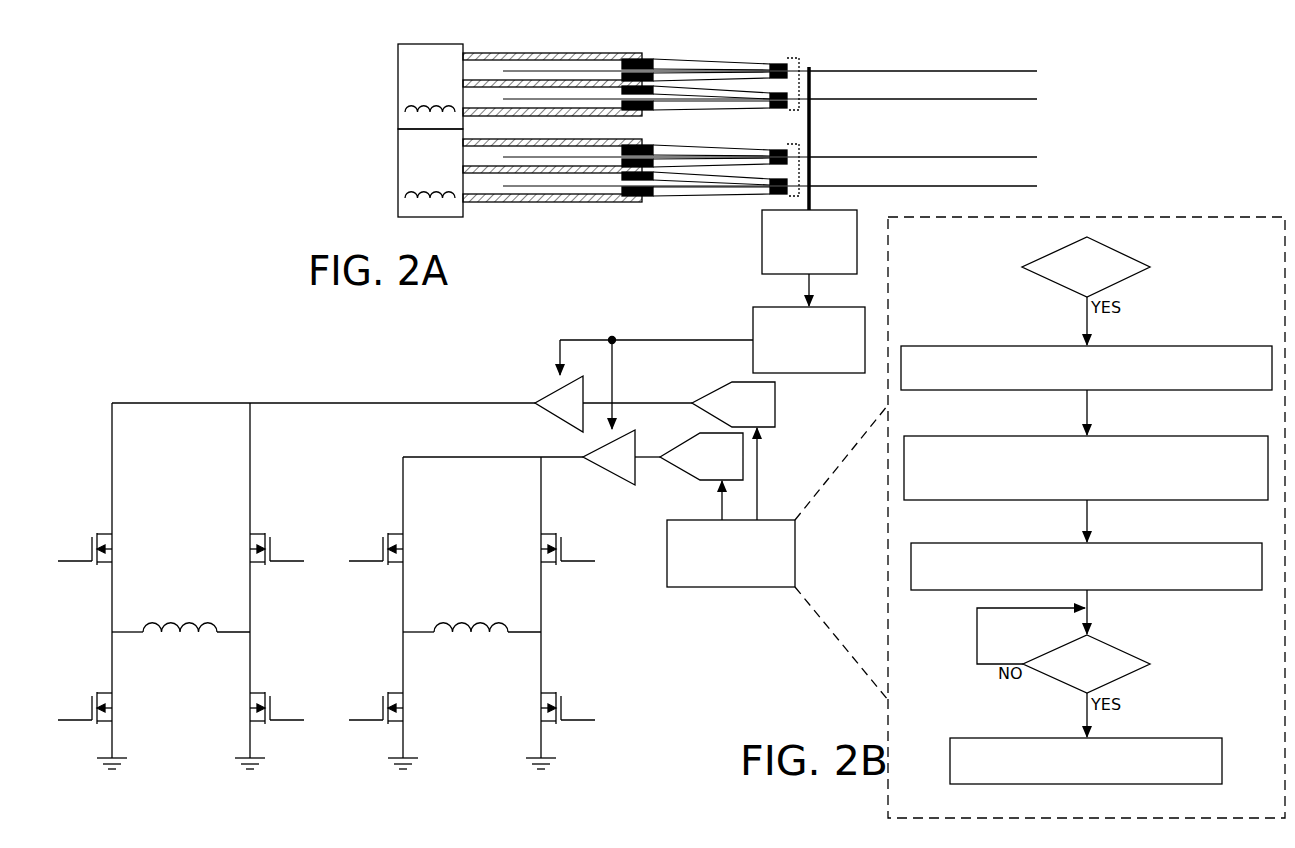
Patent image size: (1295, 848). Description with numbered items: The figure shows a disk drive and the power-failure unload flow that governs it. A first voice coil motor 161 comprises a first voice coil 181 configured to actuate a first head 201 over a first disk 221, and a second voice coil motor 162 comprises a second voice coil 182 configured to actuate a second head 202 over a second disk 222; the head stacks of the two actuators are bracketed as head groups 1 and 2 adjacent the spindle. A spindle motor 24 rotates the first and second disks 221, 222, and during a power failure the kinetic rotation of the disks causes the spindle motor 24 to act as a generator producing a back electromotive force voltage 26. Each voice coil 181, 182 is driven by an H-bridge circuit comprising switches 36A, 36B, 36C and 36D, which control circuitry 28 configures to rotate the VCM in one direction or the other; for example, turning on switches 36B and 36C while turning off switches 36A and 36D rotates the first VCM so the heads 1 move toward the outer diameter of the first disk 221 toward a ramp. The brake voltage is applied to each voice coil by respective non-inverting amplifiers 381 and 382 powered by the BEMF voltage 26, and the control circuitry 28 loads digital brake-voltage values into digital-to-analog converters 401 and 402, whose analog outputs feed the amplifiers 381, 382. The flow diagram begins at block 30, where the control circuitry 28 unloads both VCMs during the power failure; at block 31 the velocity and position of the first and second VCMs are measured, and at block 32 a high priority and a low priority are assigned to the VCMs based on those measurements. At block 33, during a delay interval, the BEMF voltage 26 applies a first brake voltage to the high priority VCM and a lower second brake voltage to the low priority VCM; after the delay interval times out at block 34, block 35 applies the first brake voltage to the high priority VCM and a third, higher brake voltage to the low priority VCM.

In FIG. 2A, the first voice coil motor 161 is at (398, 52).
In FIG. 2A, the second voice coil motor 162 is at (398, 142).
In FIG. 2A, the first voice coil 181 is at (396, 105).
In FIG. 2A, the second voice coil 182 is at (396, 192).
In FIG. 2A, the first head 201 is at (776, 59).
In FIG. 2A, the second head 202 is at (776, 147).
In FIG. 2A, the first disk 221 is at (1031, 65).
In FIG. 2A, the second disk 222 is at (1031, 155).
In FIG. 2A, the heads 1 is at (793, 74).
In FIG. 2A, the head group 2 is at (793, 160).
In FIG. 2A, the spindle motor 24 is at (762, 245).
In FIG. 2A, the back electromotive force voltage 26 is at (677, 340).
In FIG. 2A, the control circuitry 28 is at (731, 588).
In FIG. 2A, the switch 36A is at (92, 528).
In FIG. 2A, the switch 36B is at (276, 530).
In FIG. 2A, the switch 36C is at (94, 682).
In FIG. 2A, the switch 36D is at (272, 688).
In FIG. 2A, the first non-inverting amplifier 381 is at (547, 392).
In FIG. 2A, the second non-inverting amplifier 382 is at (610, 478).
In FIG. 2A, the first digital-to-analog converter 401 is at (709, 390).
In FIG. 2A, the second digital-to-analog converter 402 is at (676, 467).
In FIG. 2B, the unload block 30 is at (1127, 281).
In FIG. 2B, the measure velocity and position block 31 is at (1233, 390).
In FIG. 2B, the assign priority block 32 is at (1233, 500).
In FIG. 2B, the strong brake high priority VCM block 33 is at (1215, 590).
In FIG. 2B, the delay interval block 34 is at (1124, 680).
In FIG. 2B, the strong brake both VCMs block 35 is at (1188, 784).